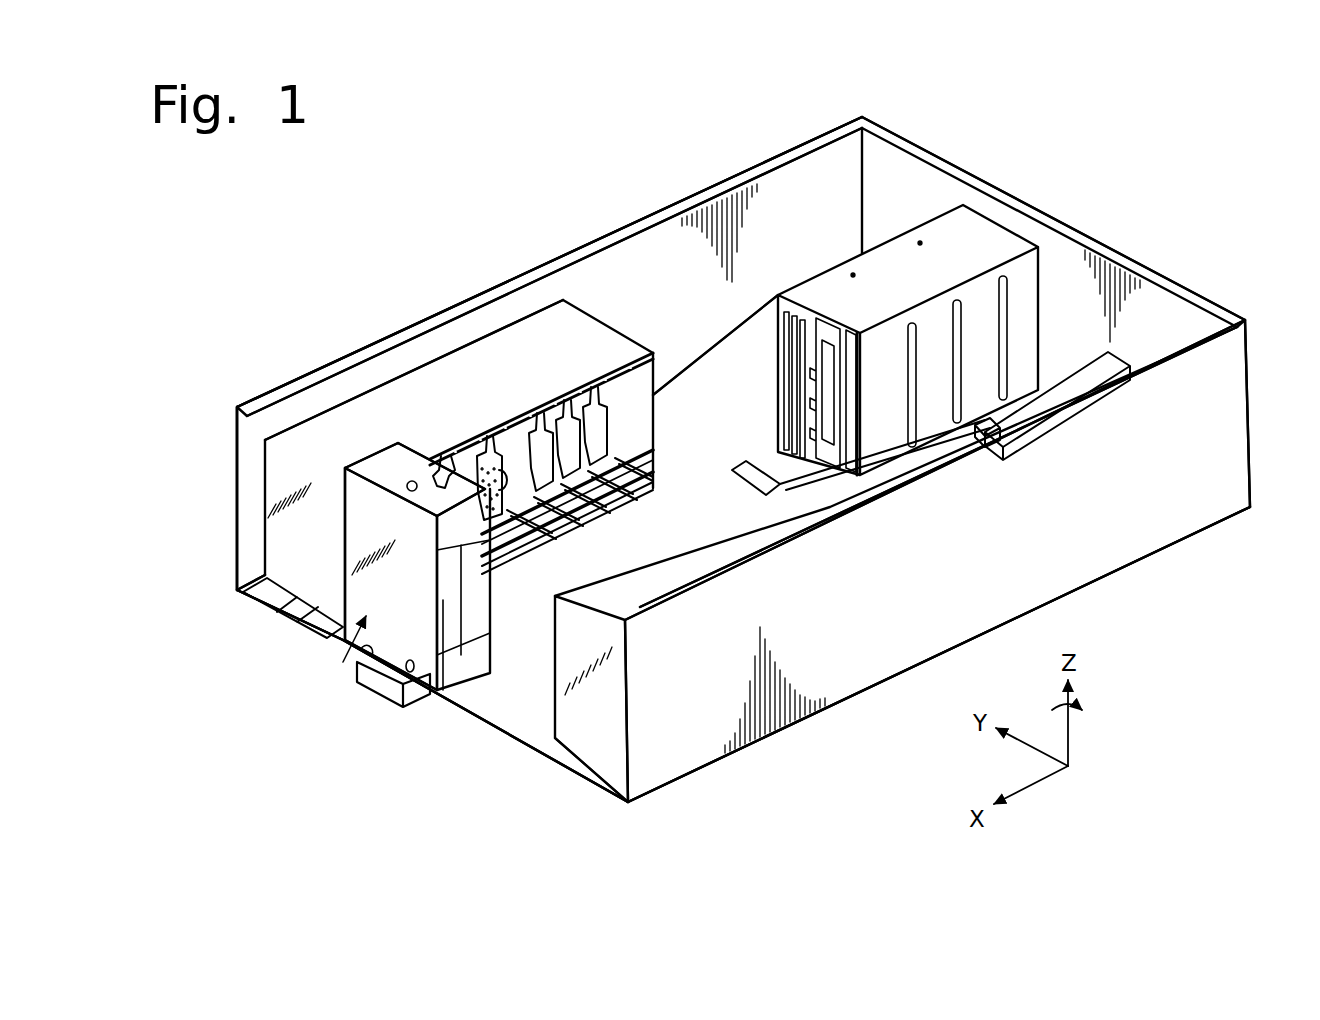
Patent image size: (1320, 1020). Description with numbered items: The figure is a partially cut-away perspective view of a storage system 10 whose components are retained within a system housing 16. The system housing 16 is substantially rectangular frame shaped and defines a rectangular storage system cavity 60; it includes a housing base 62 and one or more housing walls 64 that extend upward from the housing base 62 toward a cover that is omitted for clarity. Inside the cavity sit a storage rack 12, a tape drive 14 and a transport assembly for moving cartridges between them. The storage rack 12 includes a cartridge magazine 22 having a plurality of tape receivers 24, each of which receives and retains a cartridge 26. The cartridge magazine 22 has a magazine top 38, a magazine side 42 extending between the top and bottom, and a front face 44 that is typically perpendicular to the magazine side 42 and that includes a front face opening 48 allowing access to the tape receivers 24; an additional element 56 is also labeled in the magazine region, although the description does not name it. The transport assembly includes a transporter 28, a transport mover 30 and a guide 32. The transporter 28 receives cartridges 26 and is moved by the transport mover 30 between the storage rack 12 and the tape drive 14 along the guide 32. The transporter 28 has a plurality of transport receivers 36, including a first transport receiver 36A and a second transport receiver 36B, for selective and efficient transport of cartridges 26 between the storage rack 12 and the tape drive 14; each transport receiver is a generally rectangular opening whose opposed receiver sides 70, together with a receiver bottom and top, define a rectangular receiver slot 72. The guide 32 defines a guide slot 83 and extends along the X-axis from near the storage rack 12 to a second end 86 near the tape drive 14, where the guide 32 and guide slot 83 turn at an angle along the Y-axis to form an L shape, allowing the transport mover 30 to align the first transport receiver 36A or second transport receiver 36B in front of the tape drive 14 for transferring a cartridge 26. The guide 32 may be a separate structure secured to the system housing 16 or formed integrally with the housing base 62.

The storage system 10 is at (455, 189).
The storage rack 12 is at (455, 380).
The tape drive 14 is at (778, 300).
The system housing 16 is at (1165, 306).
The cartridge magazine 22 is at (578, 735).
The tape receiver 24 is at (540, 424).
The cartridge 26 is at (537, 525).
The transporter 28 is at (352, 615).
The transport mover 30 is at (375, 687).
The guide 32 is at (757, 484).
The transport receiver 36 is at (417, 566).
The first transport receiver 36A is at (407, 461).
The second transport receiver 36B is at (387, 470).
The magazine top 38 is at (573, 332).
The magazine side 42 is at (285, 553).
The front face 44 is at (660, 474).
The front face opening 48 is at (644, 436).
The slot partition 56 is at (599, 506).
The storage system cavity 60 is at (706, 402).
The housing base 62 is at (495, 717).
The housing wall 64 is at (832, 170).
The receiver side 70 is at (333, 630).
The receiver slot 72 is at (446, 626).
The guide slot 83 is at (531, 625).
The second end 86 is at (742, 468).